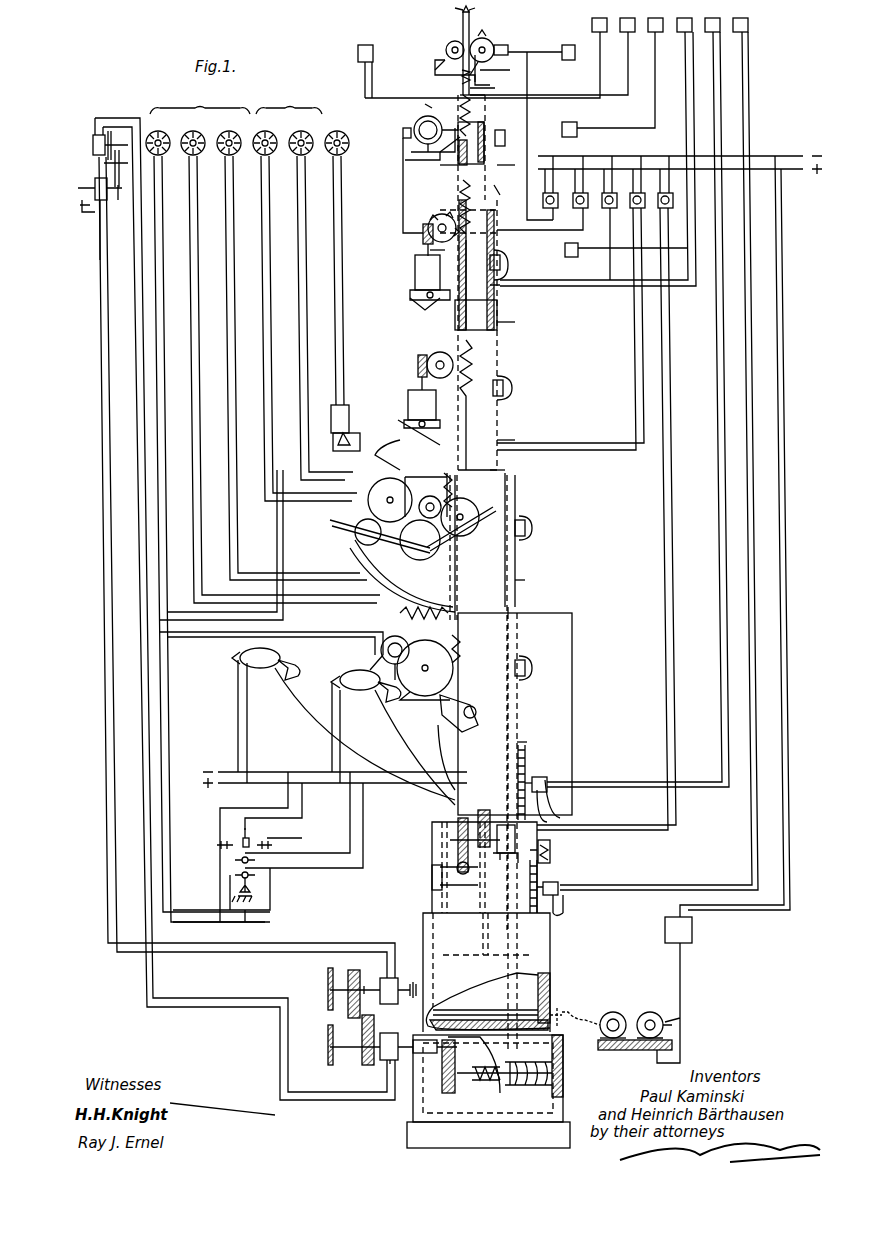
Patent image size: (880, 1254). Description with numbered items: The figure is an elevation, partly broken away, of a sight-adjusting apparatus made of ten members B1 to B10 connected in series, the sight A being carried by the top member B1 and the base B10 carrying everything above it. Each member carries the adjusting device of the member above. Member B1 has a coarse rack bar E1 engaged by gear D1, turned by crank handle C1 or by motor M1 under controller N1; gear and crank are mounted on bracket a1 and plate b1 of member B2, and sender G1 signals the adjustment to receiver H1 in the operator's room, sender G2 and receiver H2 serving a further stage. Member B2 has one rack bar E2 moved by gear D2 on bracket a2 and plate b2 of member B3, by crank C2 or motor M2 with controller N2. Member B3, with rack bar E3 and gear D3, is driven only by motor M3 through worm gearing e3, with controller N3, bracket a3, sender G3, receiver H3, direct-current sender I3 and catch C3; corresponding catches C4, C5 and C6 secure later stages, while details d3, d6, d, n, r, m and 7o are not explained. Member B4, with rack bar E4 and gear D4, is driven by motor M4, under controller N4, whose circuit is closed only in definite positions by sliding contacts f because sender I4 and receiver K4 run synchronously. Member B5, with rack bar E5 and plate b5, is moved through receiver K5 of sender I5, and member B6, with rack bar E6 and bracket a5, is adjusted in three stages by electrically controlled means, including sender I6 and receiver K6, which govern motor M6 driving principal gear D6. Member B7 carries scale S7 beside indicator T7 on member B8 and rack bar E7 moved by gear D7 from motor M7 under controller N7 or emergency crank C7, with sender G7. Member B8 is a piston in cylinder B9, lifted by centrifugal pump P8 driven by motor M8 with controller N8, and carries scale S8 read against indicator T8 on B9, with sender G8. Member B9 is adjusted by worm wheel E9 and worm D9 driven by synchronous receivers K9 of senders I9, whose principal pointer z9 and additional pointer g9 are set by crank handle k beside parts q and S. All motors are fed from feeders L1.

The sight A is at (450, 20).
The bracket a1 is at (462, 18).
The plate b1 is at (485, 25).
The top adjusting member B1 is at (490, 40).
The motor M1 is at (508, 45).
The gear D1 is at (510, 70).
The crank handle C1 is at (435, 70).
The coarse rack bar E1 is at (462, 80).
The receiver H1 is at (358, 60).
The receiver H2 is at (572, 137).
The receiver H3 is at (570, 257).
The sender G1 is at (513, 58).
The sender G2 is at (631, 73).
The sender G3 is at (607, 152).
The sender G7 is at (645, 402).
The sender G8 is at (666, 454).
The feeders L1 is at (770, 157).
The controller N1 is at (560, 188).
The controlling device N2 is at (552, 193).
The controller N3 is at (619, 218).
The controller N4 is at (580, 303).
The controller N7 is at (615, 493).
The controller N8 is at (692, 940).
The sender I3 is at (93, 147).
The sender I4 is at (337, 134).
The sender I5 is at (283, 134).
The sender I6 is at (193, 134).
The sender I9 is at (86, 210).
The gear 7o is at (125, 162).
The relay n is at (82, 186).
The shaft r is at (116, 201).
The wire m is at (97, 240).
The second adjustable member B2 is at (486, 112).
The plate b2 is at (434, 97).
The motor M2 is at (414, 120).
The crank handle C2 is at (403, 135).
The gear D2 is at (432, 152).
The bracket a2 is at (438, 158).
The rack bar E2 is at (455, 170).
The third adjusting member B3 is at (480, 180).
The stop d3 is at (497, 298).
The rack bar E3 is at (450, 216).
The gear D3 is at (423, 230).
The worm gearing e3 is at (422, 245).
The motor M3 is at (415, 276).
The spring catch C3 is at (507, 265).
The bracket a3 is at (418, 308).
The fourth adjusting member B4 is at (518, 325).
The rack bar E4 is at (430, 355).
The gear D4 is at (418, 370).
The motor M4 is at (408, 398).
The spring catch C4 is at (516, 388).
The receiver K4 is at (349, 420).
The sliding contact f is at (345, 450).
The fifth adjusting member B5 is at (518, 433).
The plate b5 is at (418, 478).
The rack bar E5 is at (465, 483).
The stop d is at (510, 470).
The receiver K5 is at (355, 540).
The spring catch C5 is at (534, 528).
The sixth adjusting member B6 is at (532, 578).
The bracket a5 is at (416, 606).
The motor M6 is at (381, 650).
The principal gear D6 is at (425, 670).
The rack bar E6 is at (462, 640).
The spring catch C6 is at (534, 671).
The receiver K6 is at (250, 675).
The seventh adjusting member B7 is at (525, 730).
The stop d6 is at (508, 745).
The scale S7 is at (517, 768).
The indicator T7 is at (527, 770).
The gear D7 is at (461, 818).
The rack bar E7 is at (488, 800).
The electric motor M7 is at (527, 812).
The crank handle C7 is at (423, 886).
The eighth adjusting member B8 is at (560, 870).
The scale S8 is at (530, 885).
The indicator T8 is at (543, 894).
The cylinder member B9 is at (552, 957).
The horizontal worm wheel E9 is at (537, 1050).
The worm D9 is at (490, 1085).
The base member B10 is at (545, 1110).
The centrifugal pump P8 is at (613, 1012).
The motor M8 is at (650, 1012).
The crank handle k is at (408, 982).
The shaft q is at (362, 986).
The additional pointer g9 is at (328, 980).
The principal pointer z9 is at (341, 1017).
The switch S is at (394, 1035).
The receiver K9 is at (388, 1058).